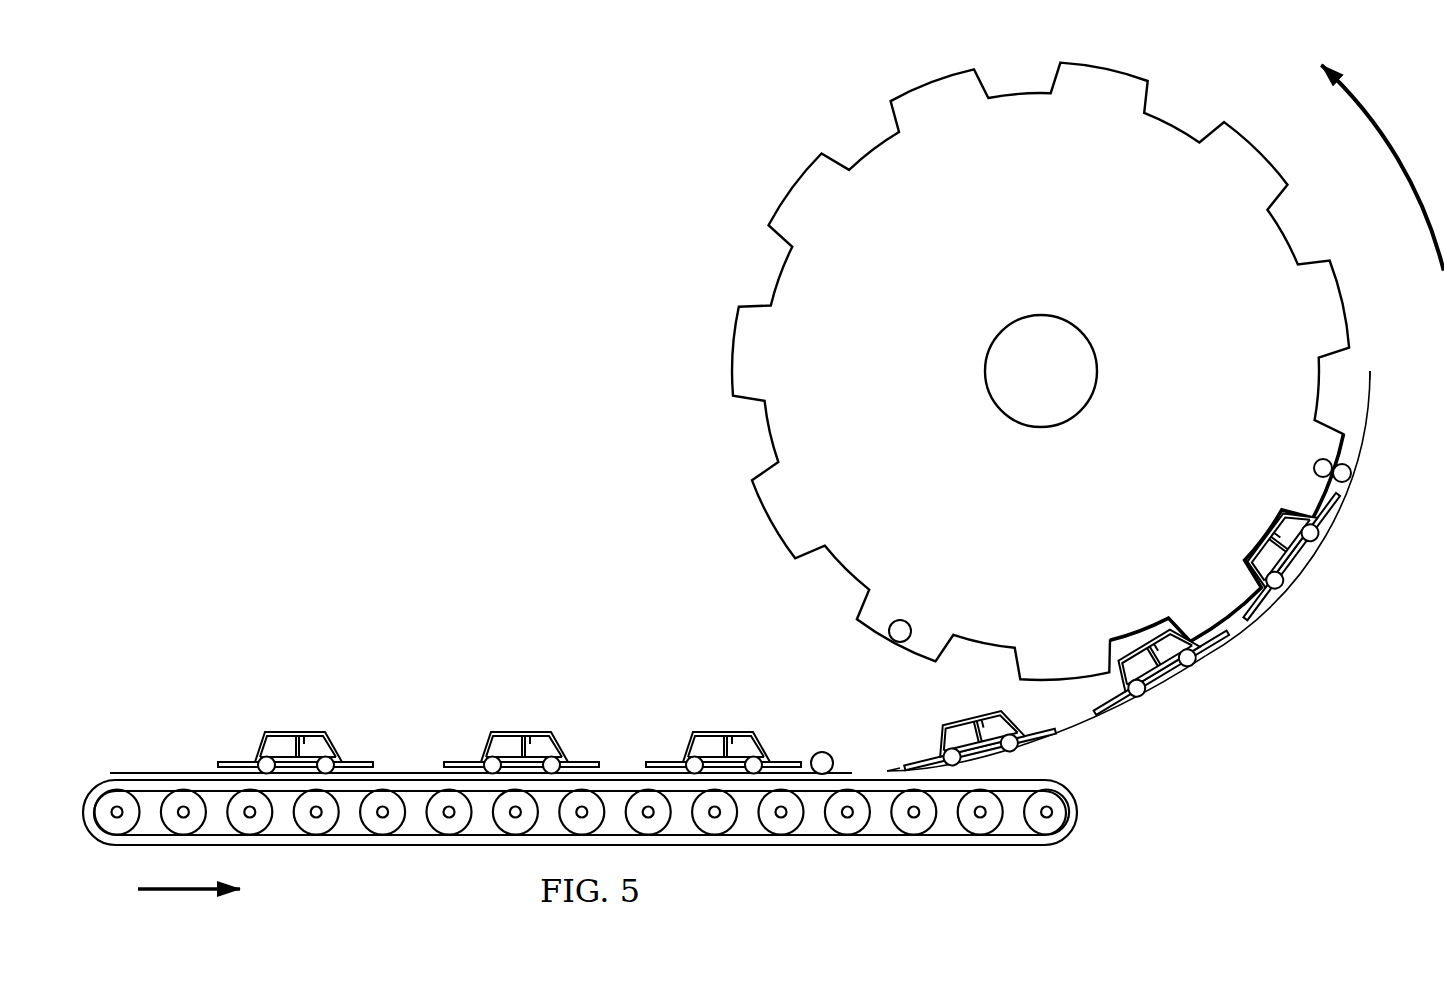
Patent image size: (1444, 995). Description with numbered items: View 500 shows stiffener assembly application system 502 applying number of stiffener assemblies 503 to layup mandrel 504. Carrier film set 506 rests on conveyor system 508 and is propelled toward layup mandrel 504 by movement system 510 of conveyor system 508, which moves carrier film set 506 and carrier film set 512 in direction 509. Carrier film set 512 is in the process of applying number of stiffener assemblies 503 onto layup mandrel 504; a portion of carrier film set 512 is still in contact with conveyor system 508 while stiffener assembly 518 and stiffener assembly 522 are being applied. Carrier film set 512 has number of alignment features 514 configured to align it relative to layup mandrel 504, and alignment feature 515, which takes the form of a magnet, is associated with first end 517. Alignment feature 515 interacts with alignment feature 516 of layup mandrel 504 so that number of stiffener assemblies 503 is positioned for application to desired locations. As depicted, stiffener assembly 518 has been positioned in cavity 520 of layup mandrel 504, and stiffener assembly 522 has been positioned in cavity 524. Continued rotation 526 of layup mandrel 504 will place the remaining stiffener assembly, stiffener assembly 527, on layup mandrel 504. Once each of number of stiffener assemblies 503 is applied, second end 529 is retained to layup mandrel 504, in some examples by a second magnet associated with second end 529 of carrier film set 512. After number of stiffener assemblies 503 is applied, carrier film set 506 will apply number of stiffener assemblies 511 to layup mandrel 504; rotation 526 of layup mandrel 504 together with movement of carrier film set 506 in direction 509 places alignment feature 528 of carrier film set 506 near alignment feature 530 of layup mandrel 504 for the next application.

The view 500 is at (321, 157).
The stiffener assembly application system 502 is at (203, 703).
The number of stiffener assemblies 503 is at (892, 705).
The layup mandrel 504 is at (733, 348).
The carrier film set 506 is at (412, 770).
The conveyor system 508 is at (1110, 823).
The direction 509 is at (190, 893).
The movement system 510 is at (418, 870).
The number of stiffener assemblies 511 is at (524, 731).
The carrier film set 512 is at (1084, 729).
The number of alignment features 514 is at (1363, 503).
The alignment feature 515 is at (1352, 471).
The alignment feature 516 is at (1315, 462).
The first end 517 is at (1371, 376).
The stiffener assembly 518 is at (1262, 525).
The cavity 520 is at (1221, 529).
The stiffener assembly 522 is at (1140, 632).
The cavity 524 is at (1086, 536).
The rotation 526 is at (1393, 138).
The stiffener assembly 527 is at (973, 684).
The alignment feature 528 is at (820, 751).
The second end 529 is at (895, 770).
The alignment feature 530 is at (906, 622).